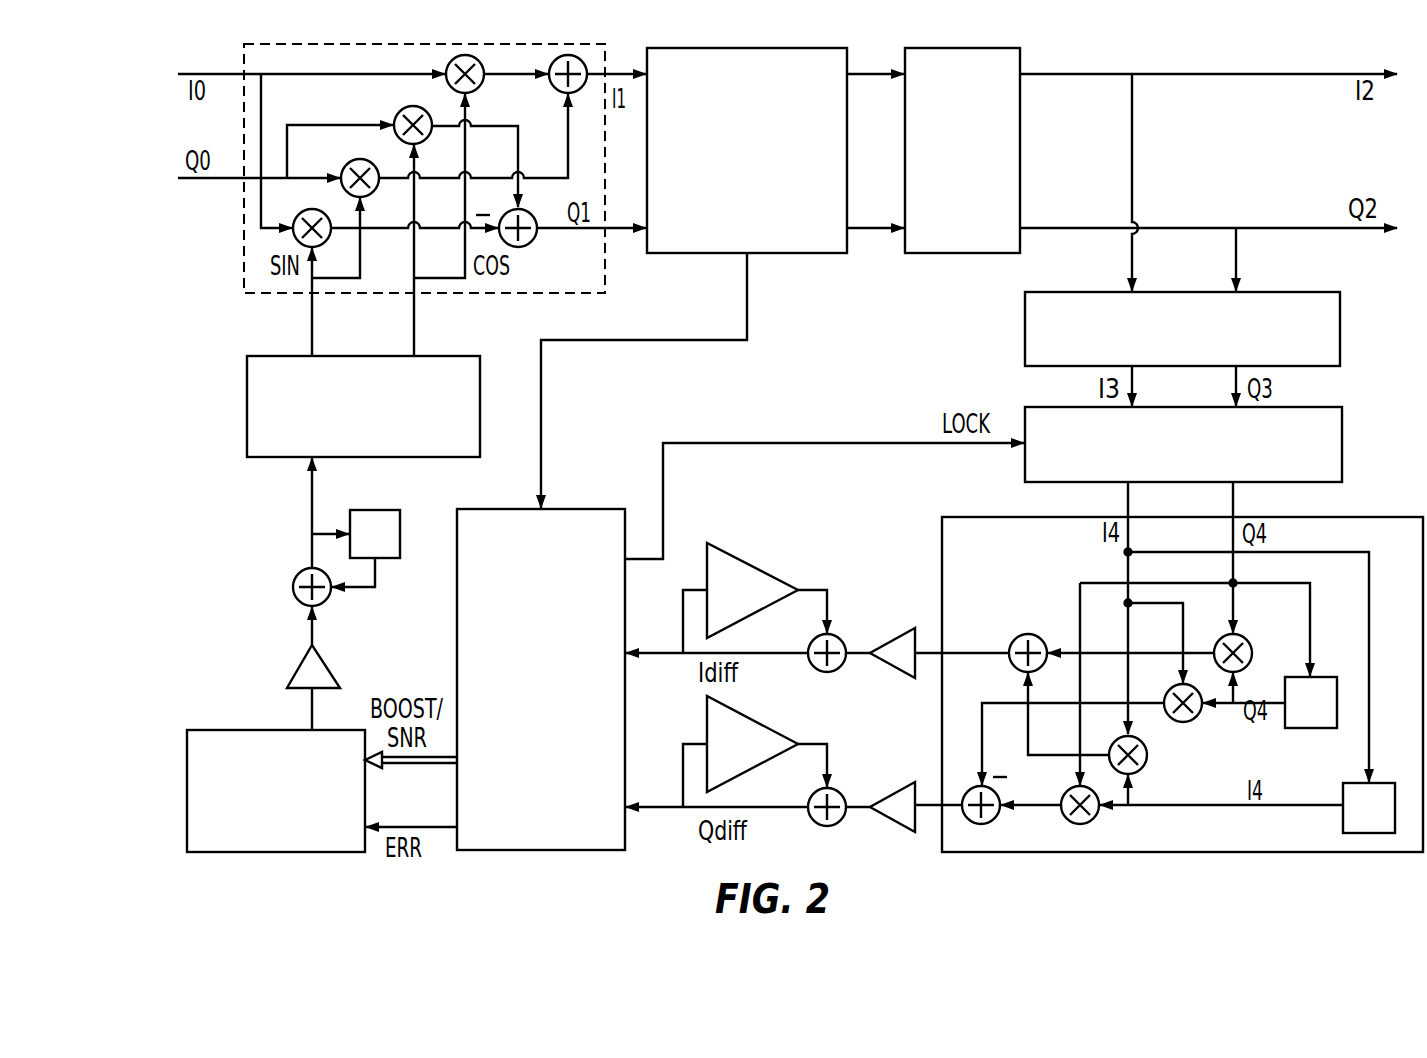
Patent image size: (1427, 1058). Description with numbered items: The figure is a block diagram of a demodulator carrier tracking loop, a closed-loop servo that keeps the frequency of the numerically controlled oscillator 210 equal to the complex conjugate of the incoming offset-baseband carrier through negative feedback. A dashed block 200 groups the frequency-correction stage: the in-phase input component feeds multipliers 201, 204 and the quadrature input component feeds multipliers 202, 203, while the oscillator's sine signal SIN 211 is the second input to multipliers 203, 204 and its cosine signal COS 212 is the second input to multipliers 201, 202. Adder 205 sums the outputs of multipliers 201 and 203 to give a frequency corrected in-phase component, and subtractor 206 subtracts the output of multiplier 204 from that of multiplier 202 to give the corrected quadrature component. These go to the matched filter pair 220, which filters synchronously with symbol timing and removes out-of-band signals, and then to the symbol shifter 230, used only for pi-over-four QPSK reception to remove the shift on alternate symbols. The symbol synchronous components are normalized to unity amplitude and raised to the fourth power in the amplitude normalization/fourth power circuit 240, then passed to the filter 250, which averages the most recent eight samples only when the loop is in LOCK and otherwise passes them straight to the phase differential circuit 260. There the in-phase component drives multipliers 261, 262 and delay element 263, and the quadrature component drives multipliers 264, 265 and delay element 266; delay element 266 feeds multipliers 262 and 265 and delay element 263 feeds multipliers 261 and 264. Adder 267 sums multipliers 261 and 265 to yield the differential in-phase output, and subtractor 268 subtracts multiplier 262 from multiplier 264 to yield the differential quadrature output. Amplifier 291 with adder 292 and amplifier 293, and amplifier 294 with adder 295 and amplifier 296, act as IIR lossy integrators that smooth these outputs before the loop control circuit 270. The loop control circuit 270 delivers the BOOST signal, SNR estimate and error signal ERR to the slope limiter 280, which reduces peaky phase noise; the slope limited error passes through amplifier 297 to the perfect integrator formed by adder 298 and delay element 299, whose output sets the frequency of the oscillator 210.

The complex mixer / derotator 200 is at (243, 207).
The multiplier 201 is at (480, 88).
The multiplier 202 is at (396, 112).
The multiplier 203 is at (347, 163).
The multiplier 204 is at (295, 238).
The adder 205 is at (556, 92).
The subtractor 206 is at (530, 246).
The numerically controlled oscillator 210 is at (272, 458).
The sine signal SIN 211 is at (309, 283).
The cosine signal COS 212 is at (416, 278).
The matched filter pair 220 is at (769, 257).
The symbol shifter 230 is at (940, 255).
The amplitude normalization/fourth power circuit 240 is at (1297, 368).
The filter 250 is at (1304, 483).
The phase differential circuit 260 is at (945, 516).
The multiplier 261 is at (1144, 770).
The multiplier 262 is at (1188, 722).
The delay element 263 is at (1343, 820).
The multiplier 264 is at (1096, 821).
The multiplier 265 is at (1245, 639).
The delay element 266 is at (1300, 729).
The adder 267 is at (1030, 633).
The subtractor 268 is at (996, 821).
The loop control circuit 270 is at (574, 508).
The slope limiter 280 is at (215, 730).
The amplifier 291 is at (898, 628).
The adder 292 is at (842, 668).
The amplifier 293 is at (763, 573).
The amplifier 294 is at (898, 782).
The adder 295 is at (838, 788).
The amplifier 296 is at (752, 724).
The amplifier 297 is at (327, 660).
The adder 298 is at (296, 574).
The delay element 299 is at (372, 510).